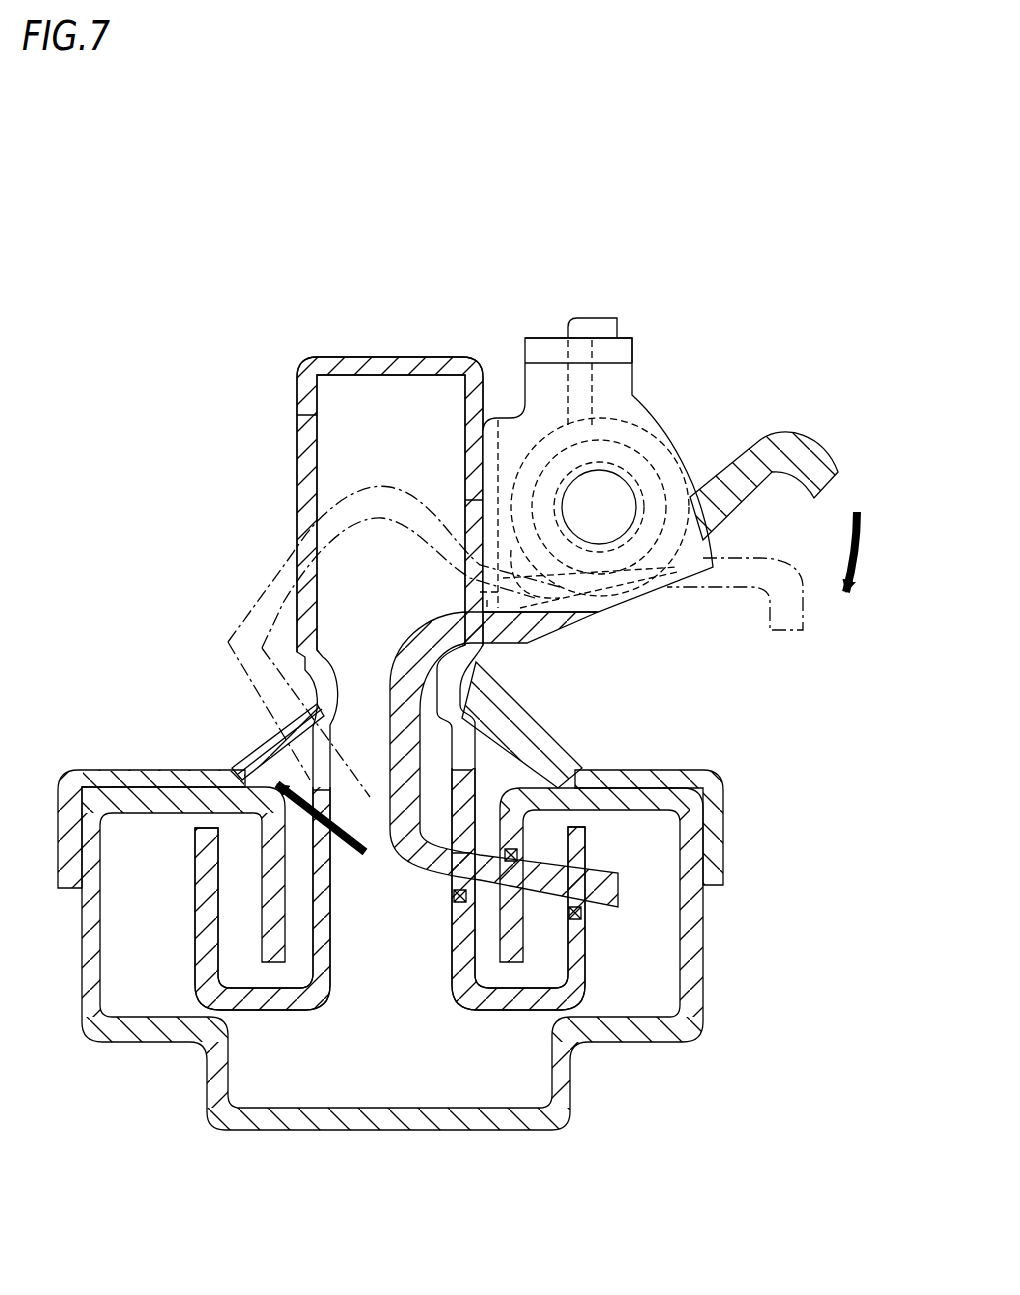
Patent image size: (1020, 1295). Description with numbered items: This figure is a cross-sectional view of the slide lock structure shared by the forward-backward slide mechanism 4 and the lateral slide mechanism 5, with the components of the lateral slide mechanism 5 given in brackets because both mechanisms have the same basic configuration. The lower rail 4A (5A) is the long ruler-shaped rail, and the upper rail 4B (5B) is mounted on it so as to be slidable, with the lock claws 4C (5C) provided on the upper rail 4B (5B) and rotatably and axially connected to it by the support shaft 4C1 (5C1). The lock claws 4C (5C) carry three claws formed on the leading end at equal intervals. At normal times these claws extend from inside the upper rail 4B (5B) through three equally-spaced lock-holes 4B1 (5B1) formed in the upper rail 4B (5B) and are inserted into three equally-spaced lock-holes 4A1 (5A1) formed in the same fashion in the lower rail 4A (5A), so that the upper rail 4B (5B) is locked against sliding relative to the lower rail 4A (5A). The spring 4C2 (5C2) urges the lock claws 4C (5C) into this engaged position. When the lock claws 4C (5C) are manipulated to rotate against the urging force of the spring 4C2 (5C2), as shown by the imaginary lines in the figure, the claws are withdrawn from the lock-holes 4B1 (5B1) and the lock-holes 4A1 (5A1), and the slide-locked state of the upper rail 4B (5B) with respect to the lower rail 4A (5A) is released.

The forward-backward slide mechanism 4 is at (466, 610).
The lateral slide mechanism 5 is at (713, 216).
The lower rail 4A is at (473, 950).
The lower rail 5A is at (701, 915).
The lock-holes 4A1 is at (608, 776).
The lock-holes 5A1 is at (541, 852).
The upper rail 4B is at (338, 683).
The upper rail 5B is at (304, 428).
The lock-holes 4B1 is at (463, 973).
The lock-holes 5B1 is at (572, 914).
The lock claws 4C is at (447, 612).
The lock claws 5C is at (447, 612).
The support shaft 4C1 is at (676, 492).
The support shaft 5C1 is at (598, 507).
The spring 4C2 is at (665, 377).
The spring 5C2 is at (610, 430).